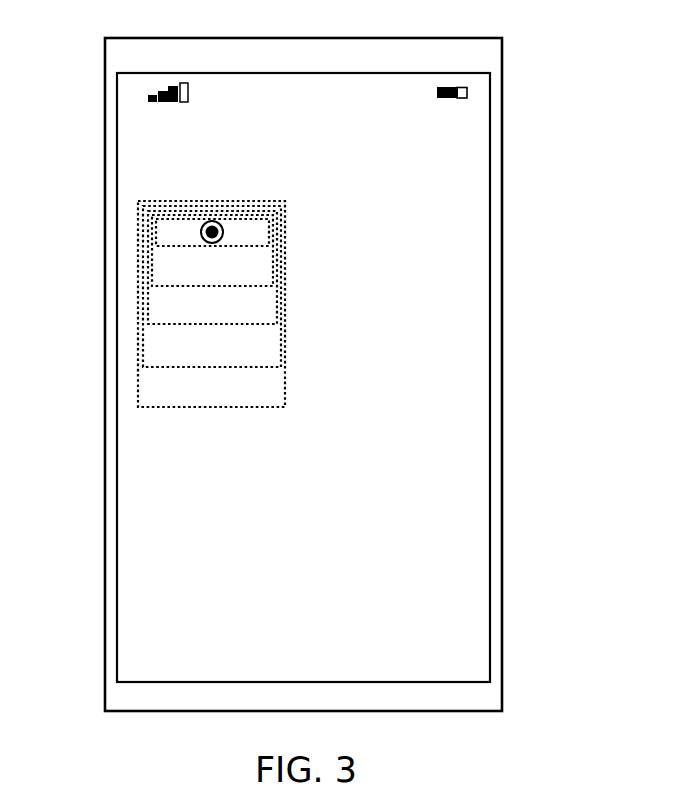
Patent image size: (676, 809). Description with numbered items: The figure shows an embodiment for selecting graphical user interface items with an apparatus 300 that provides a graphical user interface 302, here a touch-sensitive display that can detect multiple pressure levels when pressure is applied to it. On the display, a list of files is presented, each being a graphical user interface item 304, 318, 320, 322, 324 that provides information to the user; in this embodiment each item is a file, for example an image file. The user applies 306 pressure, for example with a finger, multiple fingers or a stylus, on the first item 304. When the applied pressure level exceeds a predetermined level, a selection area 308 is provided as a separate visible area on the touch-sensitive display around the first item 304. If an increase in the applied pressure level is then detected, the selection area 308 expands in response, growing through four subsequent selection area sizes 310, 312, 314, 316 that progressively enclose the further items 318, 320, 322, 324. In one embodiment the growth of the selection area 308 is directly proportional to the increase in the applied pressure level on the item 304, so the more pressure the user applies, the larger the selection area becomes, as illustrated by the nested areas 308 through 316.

The apparatus 300 is at (503, 602).
The graphical user interface 302 is at (490, 563).
The graphical user interface item 304 is at (178, 233).
The applied pressure 306 is at (212, 222).
The selection area 308 is at (283, 226).
The subsequent selection area 310 is at (283, 260).
The subsequent selection area 312 is at (283, 301).
The subsequent selection area 314 is at (283, 343).
The subsequent selection area 316 is at (284, 381).
The graphical user interface item 318 is at (178, 270).
The graphical user interface item 320 is at (178, 309).
The graphical user interface item 322 is at (178, 350).
The graphical user interface item 324 is at (178, 390).